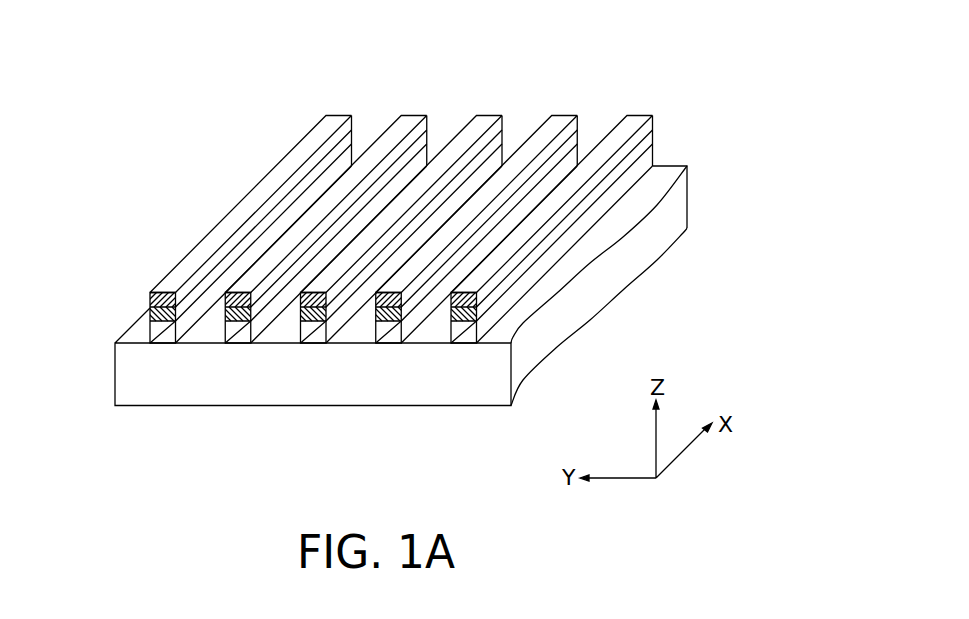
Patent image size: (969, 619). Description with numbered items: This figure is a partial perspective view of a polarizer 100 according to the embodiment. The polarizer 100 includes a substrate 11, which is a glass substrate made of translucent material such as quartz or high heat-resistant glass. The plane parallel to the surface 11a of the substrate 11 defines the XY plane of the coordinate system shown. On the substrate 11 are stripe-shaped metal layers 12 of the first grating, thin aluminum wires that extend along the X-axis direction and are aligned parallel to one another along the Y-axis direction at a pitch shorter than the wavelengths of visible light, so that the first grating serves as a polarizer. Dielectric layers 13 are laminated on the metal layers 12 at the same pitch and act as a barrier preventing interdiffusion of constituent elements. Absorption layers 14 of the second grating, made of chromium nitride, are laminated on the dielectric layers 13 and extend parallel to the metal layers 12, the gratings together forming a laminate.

The polarizer 100 is at (668, 43).
The substrate 11 is at (127, 383).
The surface of substrate 11a is at (358, 330).
The metal layer 12 is at (150, 338).
The dielectric layer 13 is at (150, 312).
The absorption layer 14 is at (150, 296).